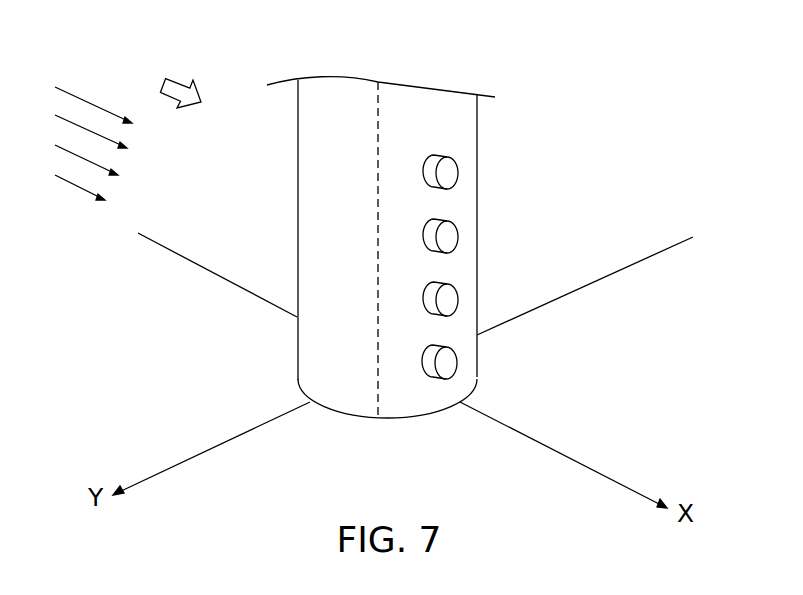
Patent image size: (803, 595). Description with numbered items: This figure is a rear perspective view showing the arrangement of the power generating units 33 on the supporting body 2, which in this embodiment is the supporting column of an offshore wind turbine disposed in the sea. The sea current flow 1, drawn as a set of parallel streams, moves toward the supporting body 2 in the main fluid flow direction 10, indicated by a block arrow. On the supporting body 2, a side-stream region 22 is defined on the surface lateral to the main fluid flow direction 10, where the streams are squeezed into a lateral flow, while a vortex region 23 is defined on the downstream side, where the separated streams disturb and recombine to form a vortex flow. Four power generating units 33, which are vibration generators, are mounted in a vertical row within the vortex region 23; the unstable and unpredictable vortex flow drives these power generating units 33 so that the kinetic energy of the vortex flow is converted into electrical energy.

The sea current flow 1 is at (80, 98).
The main fluid flow direction 10 is at (180, 83).
The supporting body 2 is at (416, 95).
The side-stream region 22 is at (307, 119).
The vortex region 23 is at (463, 135).
The power generating units 33 is at (452, 177).